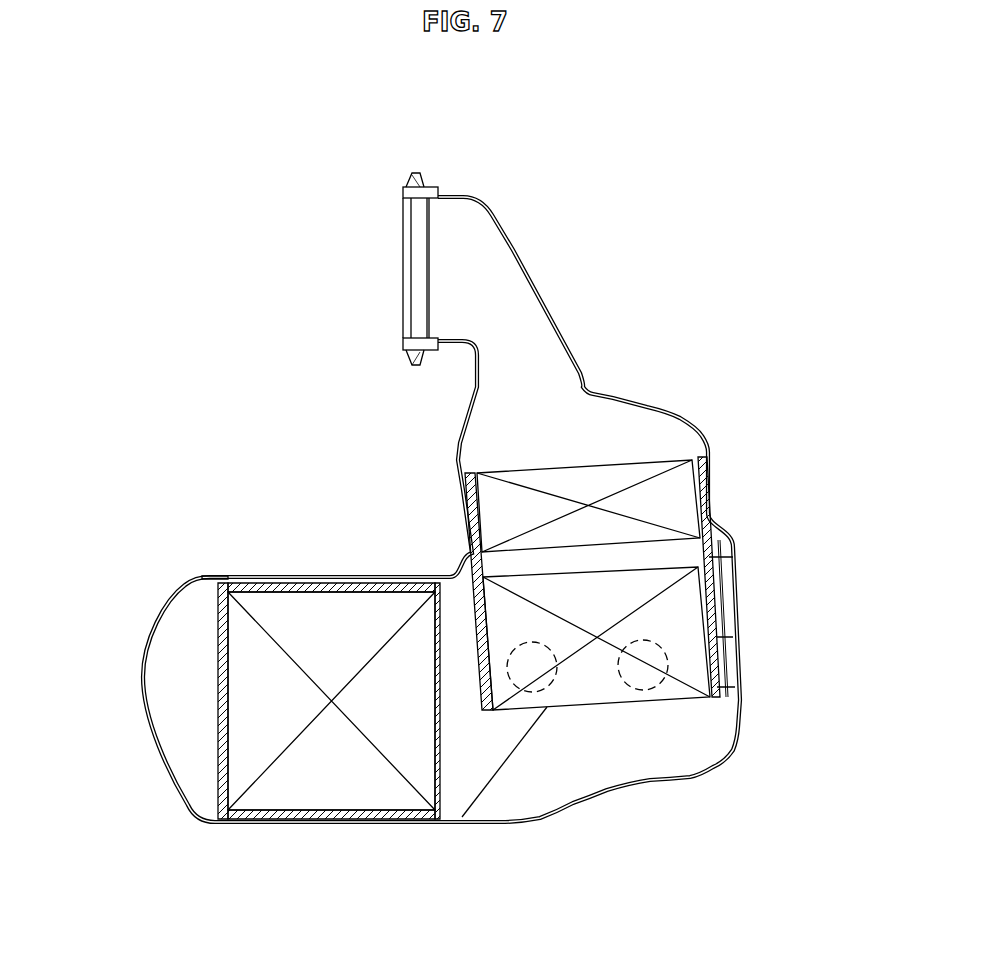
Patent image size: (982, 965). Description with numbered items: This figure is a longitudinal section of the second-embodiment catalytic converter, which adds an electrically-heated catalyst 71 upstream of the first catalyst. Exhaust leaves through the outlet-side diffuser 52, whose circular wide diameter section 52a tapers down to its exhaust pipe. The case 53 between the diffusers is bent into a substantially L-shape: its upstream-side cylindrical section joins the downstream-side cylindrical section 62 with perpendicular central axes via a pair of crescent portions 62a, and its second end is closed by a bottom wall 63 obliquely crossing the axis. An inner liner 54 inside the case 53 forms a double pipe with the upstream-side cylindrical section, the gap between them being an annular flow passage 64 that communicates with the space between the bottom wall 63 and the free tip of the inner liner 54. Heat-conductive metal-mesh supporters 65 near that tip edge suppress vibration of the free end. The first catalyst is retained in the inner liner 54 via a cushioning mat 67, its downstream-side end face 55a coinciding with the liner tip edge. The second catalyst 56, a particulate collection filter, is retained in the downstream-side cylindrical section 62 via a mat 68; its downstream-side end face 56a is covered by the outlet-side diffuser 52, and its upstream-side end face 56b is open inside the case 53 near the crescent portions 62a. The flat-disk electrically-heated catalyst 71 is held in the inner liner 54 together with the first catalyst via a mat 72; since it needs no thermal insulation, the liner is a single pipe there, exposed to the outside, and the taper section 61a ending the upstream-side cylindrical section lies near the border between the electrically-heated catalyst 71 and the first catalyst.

The outlet-side diffuser 52 is at (153, 763).
The wide diameter section 52a is at (205, 577).
The case 53 is at (740, 748).
The inner liner 54 is at (718, 557).
The downstream-side end face 55a is at (610, 707).
The second catalyst 56 is at (330, 787).
The downstream-side end face 56a is at (227, 757).
The upstream-side end face 56b is at (442, 767).
The taper section 61a is at (723, 533).
The downstream-side cylindrical section 62 is at (315, 580).
The crescent portions 62a is at (478, 773).
The bottom wall 63 is at (663, 780).
The flow passage 64 is at (722, 590).
The supporters 65 is at (740, 667).
The mat 67 is at (718, 627).
The mat 68 is at (273, 820).
The electrically-heated catalyst 71 is at (683, 483).
The mat 72 is at (710, 483).